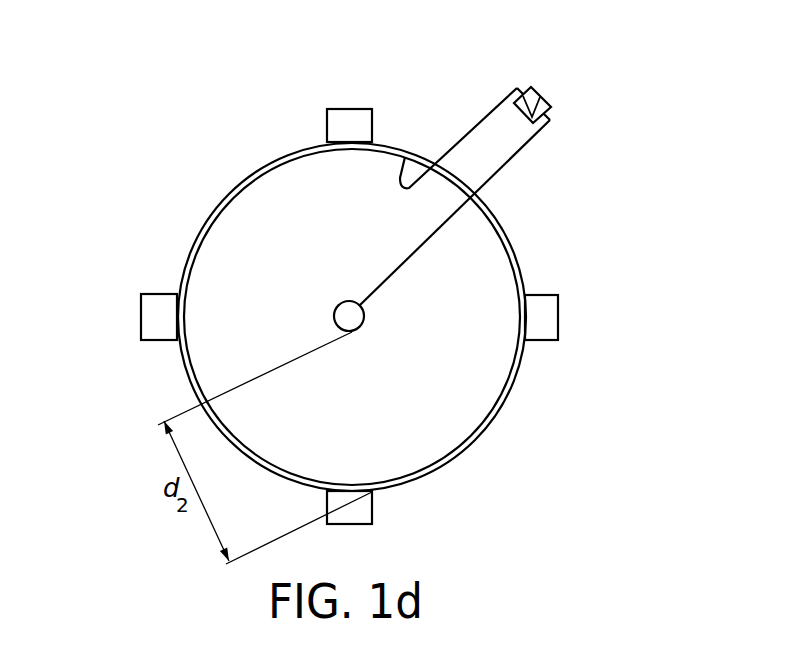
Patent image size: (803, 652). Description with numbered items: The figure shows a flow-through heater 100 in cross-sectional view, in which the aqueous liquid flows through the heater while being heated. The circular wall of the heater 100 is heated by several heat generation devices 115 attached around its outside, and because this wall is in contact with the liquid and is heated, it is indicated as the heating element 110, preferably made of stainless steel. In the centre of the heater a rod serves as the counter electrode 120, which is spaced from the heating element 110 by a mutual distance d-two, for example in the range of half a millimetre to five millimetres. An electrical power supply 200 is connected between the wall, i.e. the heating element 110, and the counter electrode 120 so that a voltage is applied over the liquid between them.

The heater 100 is at (349, 295).
The heating element 110 is at (520, 263).
The heat generation device 115 is at (348, 127).
The counter electrode 120 is at (345, 302).
The electrical power supply 200 is at (564, 80).